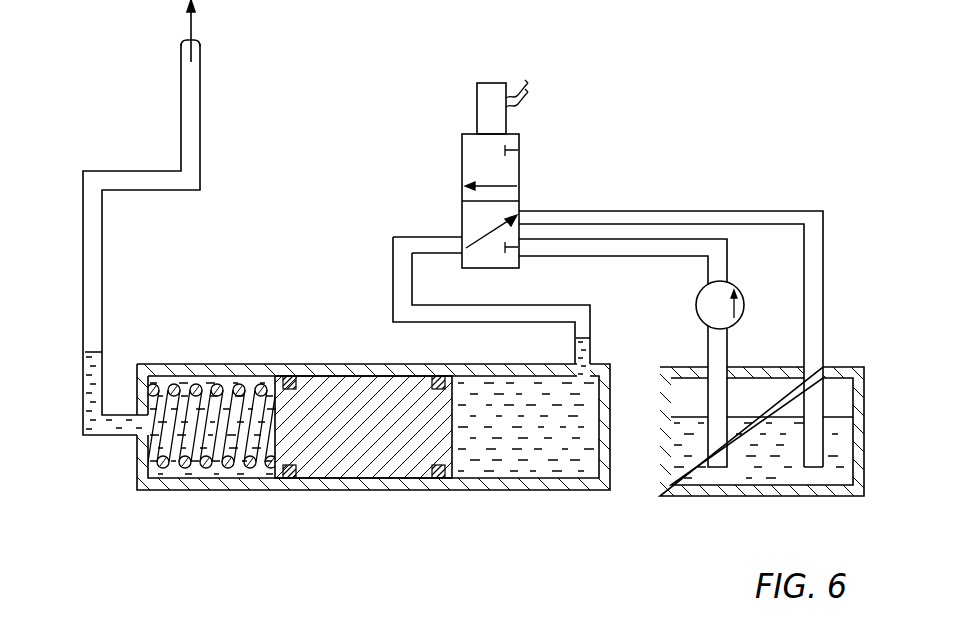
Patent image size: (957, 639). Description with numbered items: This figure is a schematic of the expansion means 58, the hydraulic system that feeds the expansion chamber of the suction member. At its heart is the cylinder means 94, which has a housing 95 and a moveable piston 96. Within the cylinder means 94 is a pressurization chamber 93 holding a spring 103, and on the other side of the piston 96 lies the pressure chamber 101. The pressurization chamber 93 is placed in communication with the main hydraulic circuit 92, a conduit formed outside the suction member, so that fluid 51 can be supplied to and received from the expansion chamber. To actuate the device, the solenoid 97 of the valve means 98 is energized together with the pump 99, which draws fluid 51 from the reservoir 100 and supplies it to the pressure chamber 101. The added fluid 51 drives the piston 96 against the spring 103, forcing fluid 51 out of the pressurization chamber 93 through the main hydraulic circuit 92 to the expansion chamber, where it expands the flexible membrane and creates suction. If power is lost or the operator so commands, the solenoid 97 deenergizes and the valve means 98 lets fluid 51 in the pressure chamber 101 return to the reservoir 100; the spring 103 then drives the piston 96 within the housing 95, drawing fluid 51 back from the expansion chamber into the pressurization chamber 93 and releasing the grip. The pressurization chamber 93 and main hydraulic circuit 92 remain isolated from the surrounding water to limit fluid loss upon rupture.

The expansion means 58 is at (683, 63).
The main hydraulic circuit 92 is at (201, 146).
The cylinder means 94 is at (104, 481).
The pressurization chamber 93 is at (210, 380).
The spring 103 is at (178, 464).
The moveable piston 96 is at (362, 466).
The housing 95 is at (297, 493).
The pressure chamber 101 is at (535, 470).
The fluid 51 is at (85, 370).
The reservoir 100 is at (857, 366).
The pump 99 is at (695, 305).
The valve means 98 is at (521, 163).
The solenoid 97 is at (477, 98).